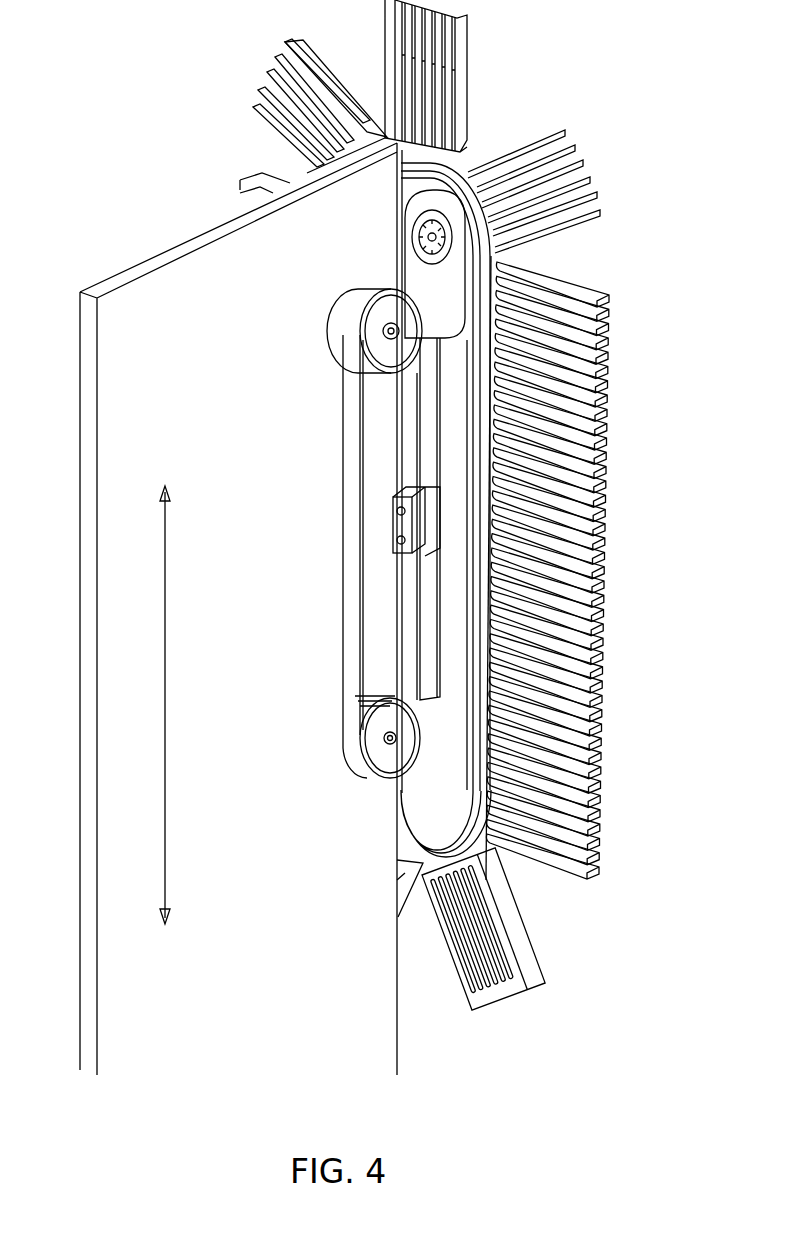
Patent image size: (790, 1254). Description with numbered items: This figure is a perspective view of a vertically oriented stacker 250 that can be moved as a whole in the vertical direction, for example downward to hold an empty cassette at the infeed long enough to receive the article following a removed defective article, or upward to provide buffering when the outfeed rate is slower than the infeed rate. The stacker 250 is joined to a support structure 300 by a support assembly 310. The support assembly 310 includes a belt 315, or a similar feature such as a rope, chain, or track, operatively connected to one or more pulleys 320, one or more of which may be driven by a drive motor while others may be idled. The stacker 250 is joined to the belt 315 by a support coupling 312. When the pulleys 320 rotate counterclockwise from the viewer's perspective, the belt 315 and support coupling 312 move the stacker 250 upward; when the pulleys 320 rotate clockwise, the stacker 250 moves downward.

The stacker 250 is at (568, 42).
The support structure 300 is at (272, 506).
The support assembly 310 is at (291, 393).
The support coupling 312 is at (427, 520).
The belt 315 is at (350, 638).
The pulley 320 is at (378, 313).